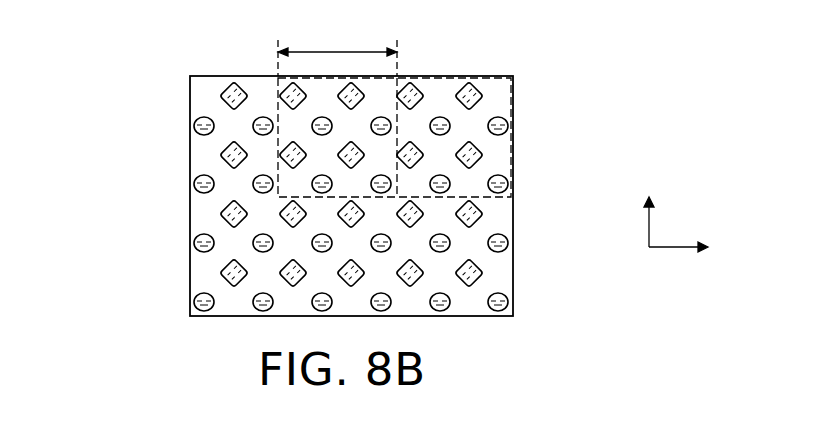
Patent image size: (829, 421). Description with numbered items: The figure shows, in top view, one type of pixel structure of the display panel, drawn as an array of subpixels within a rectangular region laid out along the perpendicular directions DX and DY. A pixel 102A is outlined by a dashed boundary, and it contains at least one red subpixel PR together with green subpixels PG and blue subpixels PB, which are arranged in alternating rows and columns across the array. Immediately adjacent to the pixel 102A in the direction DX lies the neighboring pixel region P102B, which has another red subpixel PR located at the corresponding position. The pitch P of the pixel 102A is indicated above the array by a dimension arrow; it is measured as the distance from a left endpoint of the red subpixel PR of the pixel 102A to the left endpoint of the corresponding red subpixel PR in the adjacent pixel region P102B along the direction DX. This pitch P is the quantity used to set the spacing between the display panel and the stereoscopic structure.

The pixel 102A is at (278, 168).
The pixel unit region P102B is at (488, 198).
The red subpixel PR is at (297, 152).
The green subpixel PG is at (508, 126).
The blue subpixel PB is at (476, 158).
The pitch P is at (337, 49).
The direction DX is at (701, 247).
The direction DY is at (656, 206).